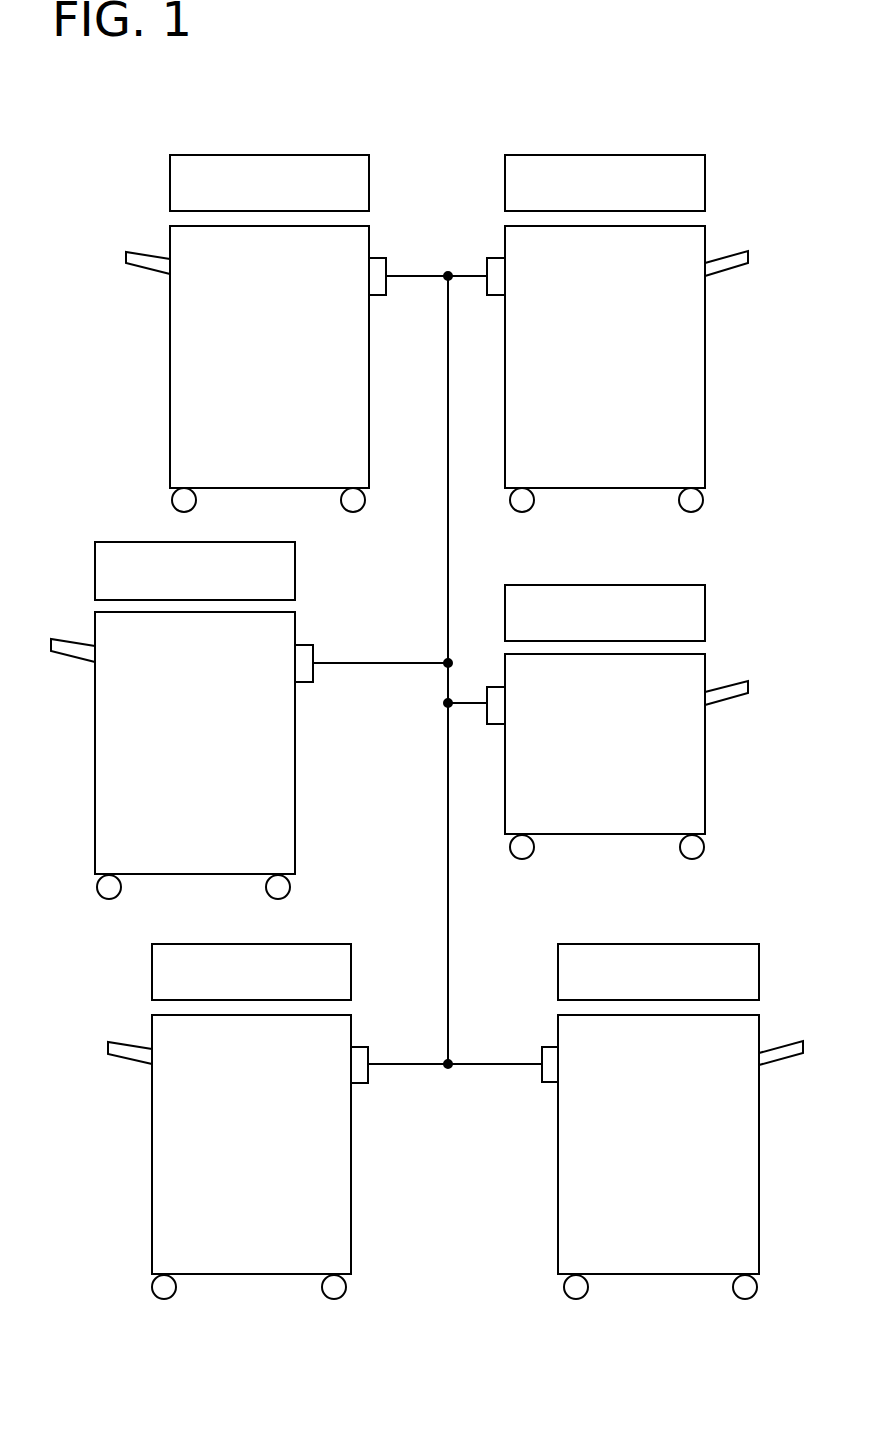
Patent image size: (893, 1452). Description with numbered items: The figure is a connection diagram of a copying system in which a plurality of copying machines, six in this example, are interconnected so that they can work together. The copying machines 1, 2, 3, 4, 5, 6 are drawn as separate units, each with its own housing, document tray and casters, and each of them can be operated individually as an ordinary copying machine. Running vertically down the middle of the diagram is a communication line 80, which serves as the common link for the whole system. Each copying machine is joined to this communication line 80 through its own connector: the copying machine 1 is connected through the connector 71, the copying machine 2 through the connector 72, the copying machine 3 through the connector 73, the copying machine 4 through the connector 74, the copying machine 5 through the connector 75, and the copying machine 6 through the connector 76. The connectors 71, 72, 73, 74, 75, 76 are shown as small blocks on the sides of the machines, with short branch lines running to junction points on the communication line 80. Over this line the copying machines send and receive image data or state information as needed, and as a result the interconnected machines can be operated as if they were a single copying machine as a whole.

The copying machine 1 is at (223, 162).
The copying machine 2 is at (540, 163).
The copying machine 3 is at (100, 577).
The copying machine 4 is at (163, 980).
The copying machine 5 is at (688, 602).
The copying machine 6 is at (742, 965).
The connector 71 is at (379, 263).
The connector 72 is at (497, 265).
The connector 73 is at (302, 648).
The connector 74 is at (360, 1050).
The connector 75 is at (492, 682).
The connector 76 is at (548, 1045).
The communication line 80 is at (449, 893).